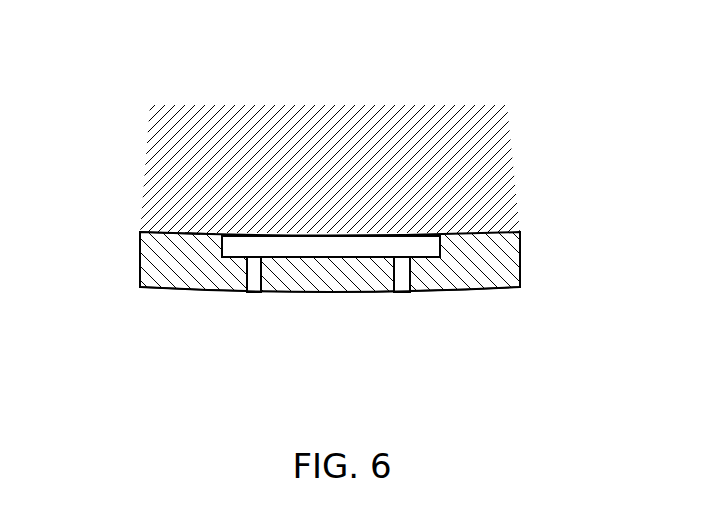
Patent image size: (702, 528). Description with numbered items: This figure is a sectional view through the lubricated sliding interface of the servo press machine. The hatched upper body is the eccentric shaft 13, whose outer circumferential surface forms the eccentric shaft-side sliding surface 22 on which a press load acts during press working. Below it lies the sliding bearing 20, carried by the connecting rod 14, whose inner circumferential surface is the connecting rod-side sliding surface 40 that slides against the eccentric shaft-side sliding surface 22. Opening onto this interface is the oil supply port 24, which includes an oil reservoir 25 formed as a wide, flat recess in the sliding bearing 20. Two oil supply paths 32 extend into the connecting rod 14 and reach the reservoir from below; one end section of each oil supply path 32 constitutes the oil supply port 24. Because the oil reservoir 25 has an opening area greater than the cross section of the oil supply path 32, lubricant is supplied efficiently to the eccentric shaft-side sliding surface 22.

The eccentric shaft 13 is at (505, 168).
The sliding bearing 20 is at (520, 263).
The oil supply port 24 is at (313, 223).
The oil reservoir 25 is at (349, 248).
The oil supply path 32 is at (256, 292).
The connecting rod-side sliding surface 40 is at (199, 223).
The eccentric shaft-side sliding surface 22 is at (170, 240).
The connecting rod 14 is at (339, 338).